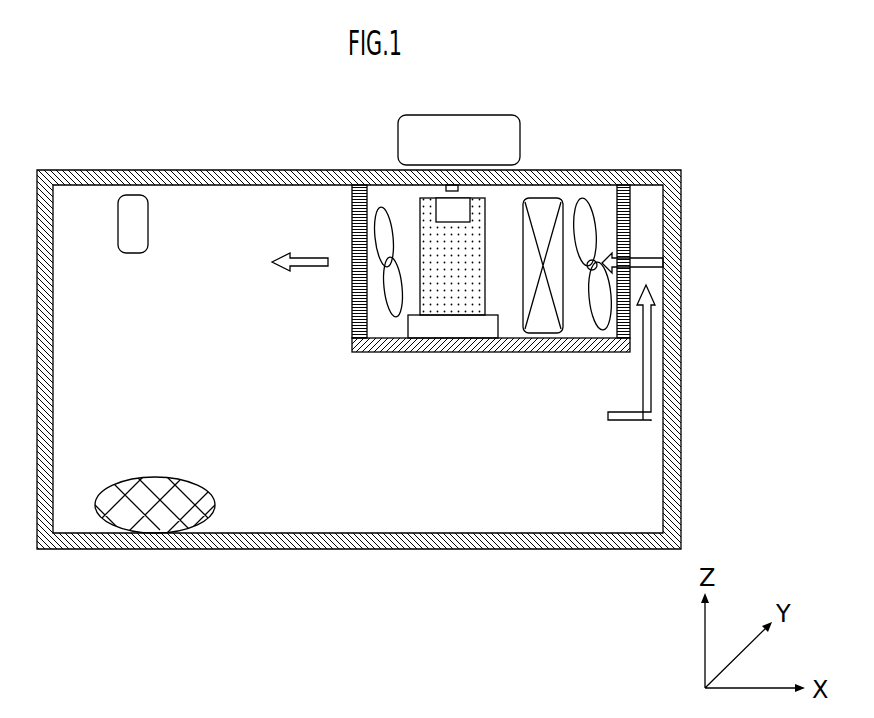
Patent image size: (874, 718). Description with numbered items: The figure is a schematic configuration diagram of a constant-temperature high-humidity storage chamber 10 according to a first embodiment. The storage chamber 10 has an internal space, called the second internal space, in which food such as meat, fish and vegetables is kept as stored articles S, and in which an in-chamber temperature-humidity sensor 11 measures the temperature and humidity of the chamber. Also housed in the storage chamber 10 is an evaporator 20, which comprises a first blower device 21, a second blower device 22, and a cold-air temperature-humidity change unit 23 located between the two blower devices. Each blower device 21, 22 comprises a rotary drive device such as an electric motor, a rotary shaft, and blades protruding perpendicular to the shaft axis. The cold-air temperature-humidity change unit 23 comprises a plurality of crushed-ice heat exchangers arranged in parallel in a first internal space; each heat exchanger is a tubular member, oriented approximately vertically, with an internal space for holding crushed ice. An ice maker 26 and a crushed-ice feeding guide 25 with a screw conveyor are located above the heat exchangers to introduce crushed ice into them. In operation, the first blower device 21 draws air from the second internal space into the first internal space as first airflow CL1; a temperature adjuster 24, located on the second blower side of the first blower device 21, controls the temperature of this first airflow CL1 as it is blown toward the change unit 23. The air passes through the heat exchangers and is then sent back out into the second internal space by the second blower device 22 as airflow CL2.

The constant-temperature high-humidity storage chamber 10 is at (196, 154).
The in-chamber temperature-humidity sensor 11 is at (140, 222).
The evaporator 20 is at (573, 148).
The first blower device 21 is at (588, 198).
The second blower device 22 is at (372, 302).
The cold-air temperature-humidity change unit 23 is at (420, 300).
The temperature adjuster 24 is at (548, 340).
The crushed-ice feeding guide 25 is at (452, 322).
The ice maker 26 is at (495, 115).
The first airflow CL1 is at (642, 258).
The airflow CL2 is at (307, 270).
The stored articles S is at (168, 478).